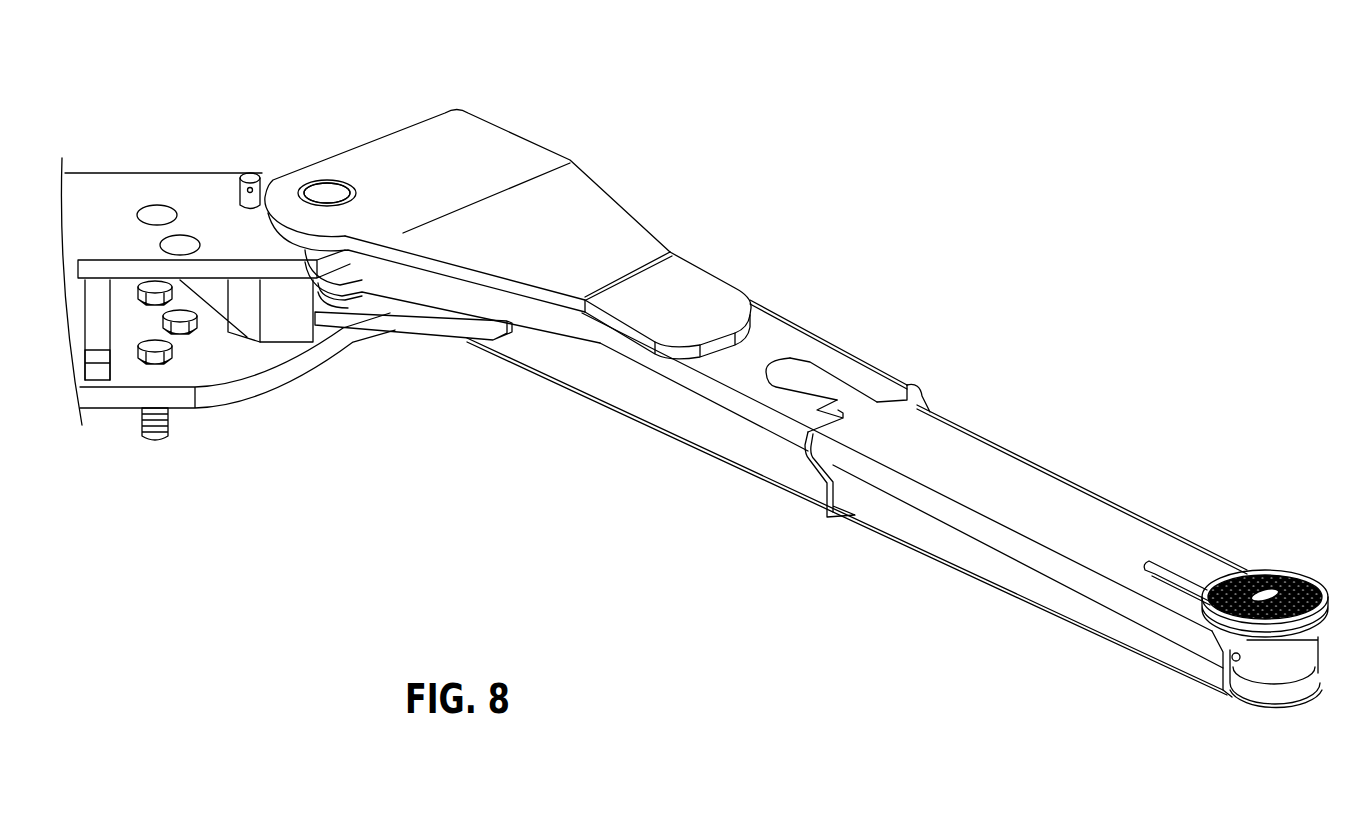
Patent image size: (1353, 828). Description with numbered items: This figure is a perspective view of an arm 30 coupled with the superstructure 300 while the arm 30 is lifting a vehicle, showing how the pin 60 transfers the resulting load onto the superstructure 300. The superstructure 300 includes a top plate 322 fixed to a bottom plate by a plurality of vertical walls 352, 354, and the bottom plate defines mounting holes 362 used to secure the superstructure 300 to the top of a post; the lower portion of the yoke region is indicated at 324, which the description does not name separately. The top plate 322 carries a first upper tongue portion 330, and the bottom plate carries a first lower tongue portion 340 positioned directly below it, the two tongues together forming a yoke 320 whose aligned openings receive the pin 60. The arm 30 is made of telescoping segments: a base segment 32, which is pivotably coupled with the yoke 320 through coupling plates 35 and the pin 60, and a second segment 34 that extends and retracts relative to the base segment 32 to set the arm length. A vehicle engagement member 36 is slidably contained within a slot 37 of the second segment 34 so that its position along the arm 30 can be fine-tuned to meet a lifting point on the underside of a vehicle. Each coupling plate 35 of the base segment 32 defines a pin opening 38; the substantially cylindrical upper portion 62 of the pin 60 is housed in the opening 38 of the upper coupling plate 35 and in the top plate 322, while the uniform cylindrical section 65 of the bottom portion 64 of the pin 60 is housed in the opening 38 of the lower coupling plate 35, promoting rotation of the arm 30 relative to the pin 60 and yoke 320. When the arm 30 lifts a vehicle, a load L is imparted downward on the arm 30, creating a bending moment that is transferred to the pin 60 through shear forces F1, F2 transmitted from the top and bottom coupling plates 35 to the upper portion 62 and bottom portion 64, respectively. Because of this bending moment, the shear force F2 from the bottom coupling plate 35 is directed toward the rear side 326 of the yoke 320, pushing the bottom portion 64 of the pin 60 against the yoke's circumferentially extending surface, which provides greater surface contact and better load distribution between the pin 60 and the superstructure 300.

The superstructure 300 is at (212, 78).
The arm 30 is at (930, 295).
The base segment 32 is at (818, 343).
The second segment 34 is at (978, 563).
The coupling plate 35 is at (524, 147).
The vehicle engagement member 36 is at (1303, 575).
The slot 37 is at (1172, 557).
The pin opening 38 is at (318, 175).
The pin 60 is at (338, 190).
The upper portion 62 is at (327, 193).
The bottom portion 64 is at (318, 297).
The uniform cylindrical section 65 is at (356, 301).
The yoke 320 is at (371, 431).
The top plate 322 is at (93, 172).
The base 324 is at (121, 441).
The rear side 326 is at (134, 160).
The first upper tongue portion 330 is at (335, 247).
The first lower tongue portion 340 is at (343, 328).
The vertical wall 352 is at (277, 327).
The vertical wall 354 is at (98, 357).
The mounting holes 362 is at (202, 328).
The shear force F1 is at (296, 177).
The shear force F2 is at (362, 311).
The load L is at (1270, 557).